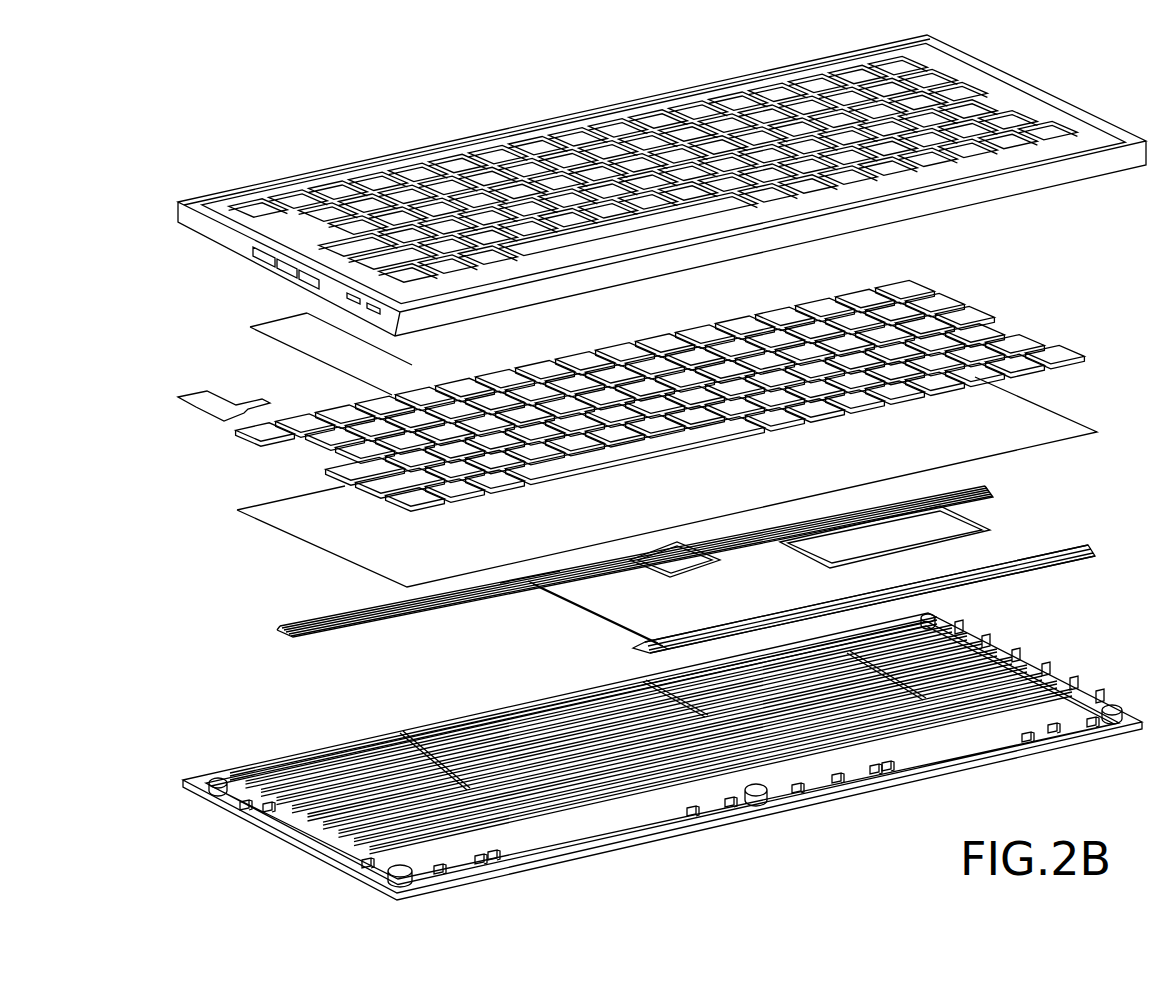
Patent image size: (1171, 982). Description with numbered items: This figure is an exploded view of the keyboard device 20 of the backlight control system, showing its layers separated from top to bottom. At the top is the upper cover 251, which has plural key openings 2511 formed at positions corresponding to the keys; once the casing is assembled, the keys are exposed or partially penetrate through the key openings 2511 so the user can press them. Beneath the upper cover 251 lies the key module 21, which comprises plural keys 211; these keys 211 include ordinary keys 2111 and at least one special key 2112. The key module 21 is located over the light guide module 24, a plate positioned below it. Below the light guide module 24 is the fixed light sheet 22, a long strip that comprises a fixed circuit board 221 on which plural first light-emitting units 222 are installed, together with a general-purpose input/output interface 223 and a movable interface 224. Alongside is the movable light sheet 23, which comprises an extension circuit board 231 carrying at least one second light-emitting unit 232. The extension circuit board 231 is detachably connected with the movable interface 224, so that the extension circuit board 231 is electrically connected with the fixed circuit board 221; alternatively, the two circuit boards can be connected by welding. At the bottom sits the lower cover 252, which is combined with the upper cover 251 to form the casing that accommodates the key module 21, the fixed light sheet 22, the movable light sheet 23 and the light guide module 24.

The keyboard device 20 is at (318, 81).
The key module 21 is at (220, 422).
The keys 211 is at (988, 328).
The ordinary keys 2111 is at (868, 338).
The special key 2112 is at (905, 385).
The fixed light sheet 22 is at (611, 582).
The fixed circuit board 221 is at (430, 600).
The first light-emitting units 222 is at (503, 580).
The general-purpose input/output (GPIO) interface 223 is at (685, 558).
The movable interface 224 is at (532, 578).
The movable light sheet 23 is at (653, 602).
The extension circuit board 231 is at (963, 503).
The second light-emitting unit 232 is at (960, 583).
The light guide module 24 is at (1030, 412).
The upper cover 251 is at (1035, 90).
The key openings 2511 is at (870, 73).
The lower cover 252 is at (1082, 700).